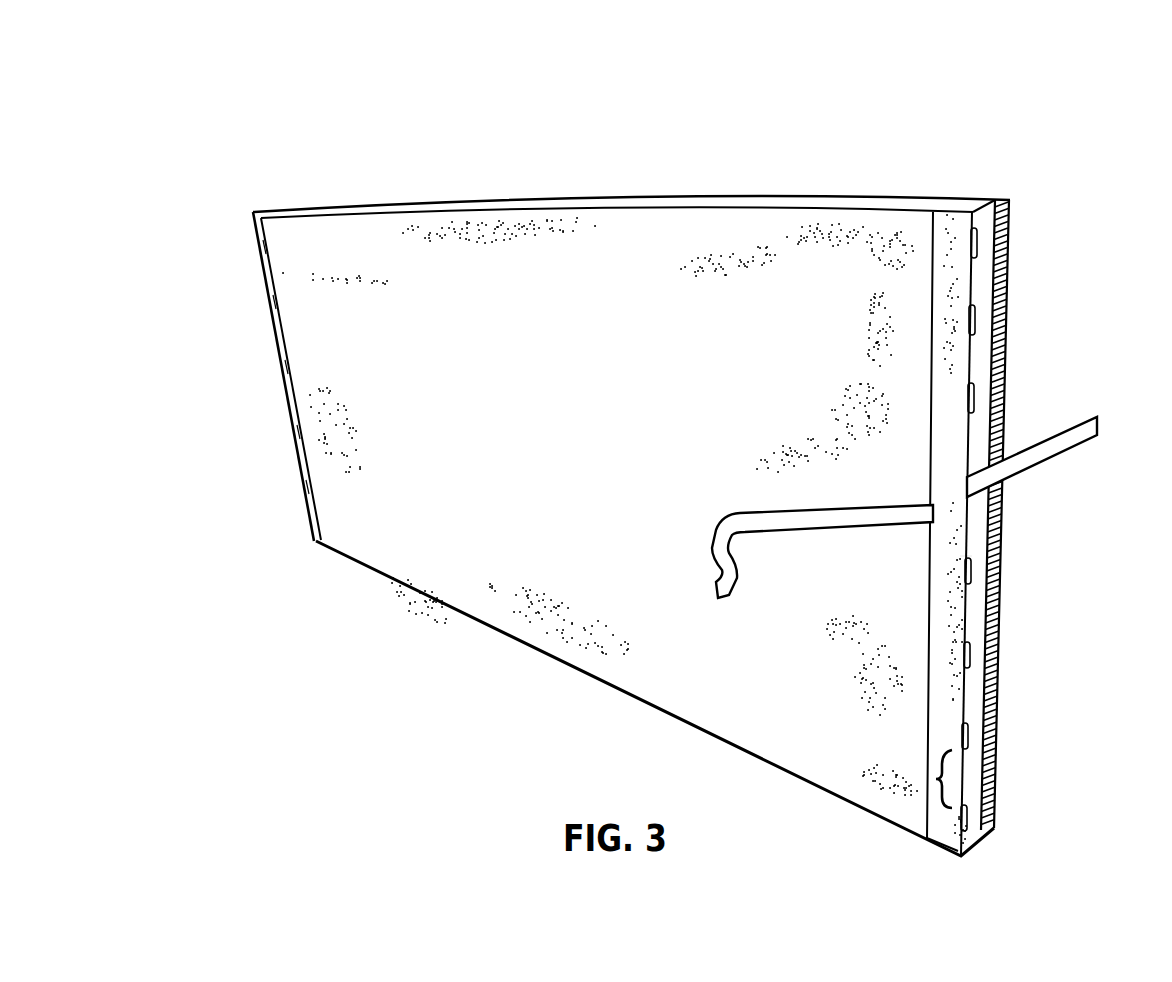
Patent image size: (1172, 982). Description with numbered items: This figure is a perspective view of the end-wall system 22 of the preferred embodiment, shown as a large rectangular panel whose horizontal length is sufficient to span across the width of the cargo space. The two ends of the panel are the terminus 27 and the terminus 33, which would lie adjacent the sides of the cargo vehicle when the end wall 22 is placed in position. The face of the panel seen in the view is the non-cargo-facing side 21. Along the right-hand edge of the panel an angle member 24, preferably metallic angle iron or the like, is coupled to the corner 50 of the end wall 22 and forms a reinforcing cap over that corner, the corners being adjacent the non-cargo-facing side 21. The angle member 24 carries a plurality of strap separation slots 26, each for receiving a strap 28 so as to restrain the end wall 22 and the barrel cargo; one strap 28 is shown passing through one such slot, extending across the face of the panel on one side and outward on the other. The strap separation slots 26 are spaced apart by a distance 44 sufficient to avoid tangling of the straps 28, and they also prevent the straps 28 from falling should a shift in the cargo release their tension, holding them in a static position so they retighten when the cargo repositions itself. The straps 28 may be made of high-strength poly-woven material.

The non-cargo-facing side 21 is at (505, 399).
The end-wall system 22 is at (719, 110).
The angle member 24 is at (985, 258).
The strap separation slot 26 is at (968, 565).
The terminus 27 is at (1019, 344).
The strap 28 is at (1063, 430).
The terminus 33 is at (257, 327).
The distance 44 is at (938, 779).
The corner 50 is at (972, 200).